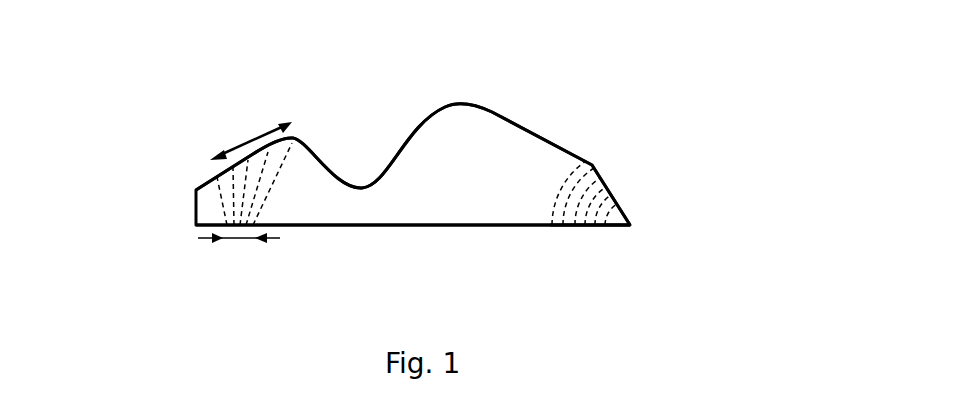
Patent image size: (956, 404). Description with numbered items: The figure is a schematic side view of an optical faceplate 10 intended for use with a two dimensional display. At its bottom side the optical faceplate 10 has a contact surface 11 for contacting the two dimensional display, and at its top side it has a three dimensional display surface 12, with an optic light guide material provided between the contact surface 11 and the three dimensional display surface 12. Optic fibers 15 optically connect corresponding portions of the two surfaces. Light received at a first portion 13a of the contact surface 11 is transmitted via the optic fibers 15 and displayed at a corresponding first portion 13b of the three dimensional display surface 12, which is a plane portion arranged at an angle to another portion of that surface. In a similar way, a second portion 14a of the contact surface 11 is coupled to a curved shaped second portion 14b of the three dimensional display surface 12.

The optical faceplate 10 is at (168, 60).
The contact surface 11 is at (438, 225).
The three dimensional display surface 12 is at (490, 110).
The first portion of the contact surface 13a is at (578, 227).
The first portion of the three dimensional display surface 13b is at (617, 200).
The second portion of the contact surface 14a is at (233, 240).
The second portion of the three dimensional display surface 14b is at (249, 145).
The optic fibers 15 is at (592, 172).